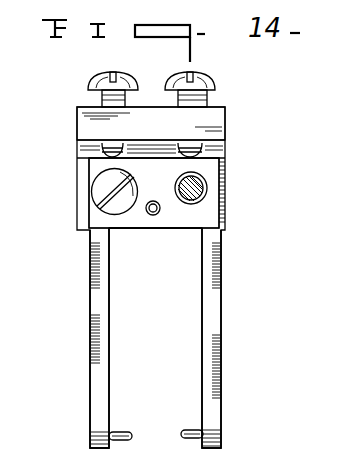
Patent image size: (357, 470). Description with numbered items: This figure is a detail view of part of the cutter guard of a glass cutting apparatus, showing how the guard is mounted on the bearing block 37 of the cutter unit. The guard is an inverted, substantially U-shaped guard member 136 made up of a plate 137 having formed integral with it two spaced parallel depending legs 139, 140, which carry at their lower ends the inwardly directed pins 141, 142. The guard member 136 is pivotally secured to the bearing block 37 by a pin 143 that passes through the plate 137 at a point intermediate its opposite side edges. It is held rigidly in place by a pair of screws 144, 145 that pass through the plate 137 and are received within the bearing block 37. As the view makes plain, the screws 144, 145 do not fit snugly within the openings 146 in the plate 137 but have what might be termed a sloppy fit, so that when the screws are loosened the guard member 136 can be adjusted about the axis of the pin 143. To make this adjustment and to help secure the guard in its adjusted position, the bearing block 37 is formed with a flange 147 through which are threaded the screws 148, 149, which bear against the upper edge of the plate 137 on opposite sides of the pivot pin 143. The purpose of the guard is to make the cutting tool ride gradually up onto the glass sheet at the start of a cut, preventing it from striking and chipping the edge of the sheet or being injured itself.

The bearing block 37 is at (225, 212).
The guard member 136 is at (222, 290).
The plate 137 is at (180, 220).
The leg 139 is at (110, 326).
The leg 140 is at (222, 331).
The pin 141 is at (127, 432).
The pin 142 is at (195, 430).
The pin 143 is at (153, 216).
The screw 144 is at (100, 192).
The screw 145 is at (208, 181).
The openings 146 is at (202, 168).
The flange 147 is at (78, 125).
The screw 148 is at (102, 80).
The screw 149 is at (200, 80).